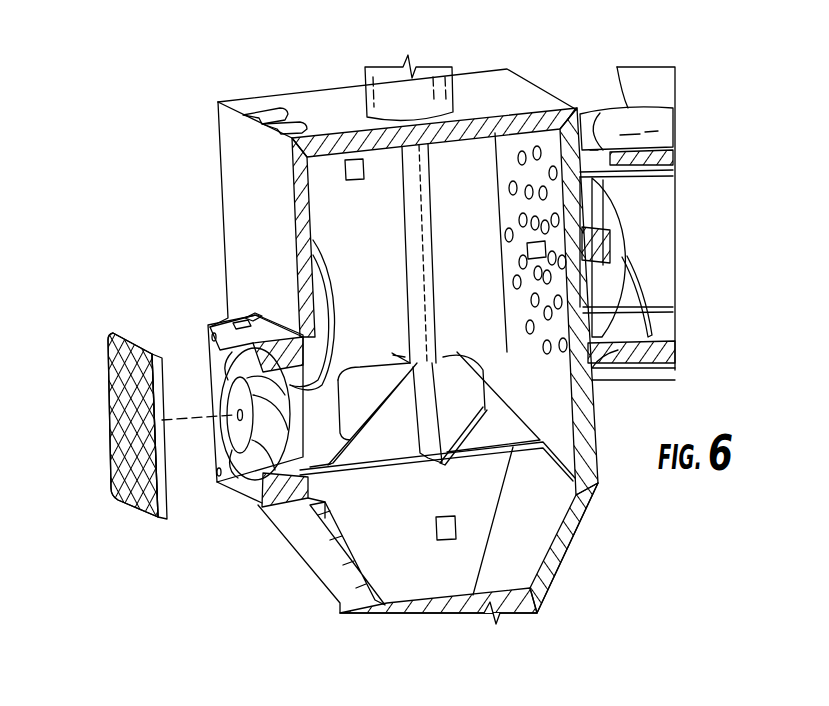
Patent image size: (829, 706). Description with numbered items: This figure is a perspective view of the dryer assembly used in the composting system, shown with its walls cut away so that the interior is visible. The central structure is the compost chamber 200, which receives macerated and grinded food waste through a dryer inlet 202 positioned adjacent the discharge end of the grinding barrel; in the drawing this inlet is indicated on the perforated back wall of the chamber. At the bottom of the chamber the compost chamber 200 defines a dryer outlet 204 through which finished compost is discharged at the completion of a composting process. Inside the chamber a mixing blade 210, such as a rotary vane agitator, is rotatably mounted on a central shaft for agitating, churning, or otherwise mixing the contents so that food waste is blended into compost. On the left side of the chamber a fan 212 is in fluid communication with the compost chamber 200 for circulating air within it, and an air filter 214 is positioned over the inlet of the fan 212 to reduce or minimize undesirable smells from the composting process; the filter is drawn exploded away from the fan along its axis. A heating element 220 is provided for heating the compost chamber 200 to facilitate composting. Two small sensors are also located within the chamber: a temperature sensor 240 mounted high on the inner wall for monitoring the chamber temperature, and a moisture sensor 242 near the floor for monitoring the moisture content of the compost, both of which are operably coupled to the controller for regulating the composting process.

The compost chamber 200 is at (496, 128).
The dryer inlet 202 is at (486, 238).
The dryer outlet 204 is at (417, 600).
The mixing blade 210 is at (393, 437).
The fan 212 is at (223, 478).
The air filter 214 is at (123, 400).
The heating element 220 is at (325, 300).
The temperature sensor 240 is at (354, 160).
The moisture sensor 242 is at (456, 526).